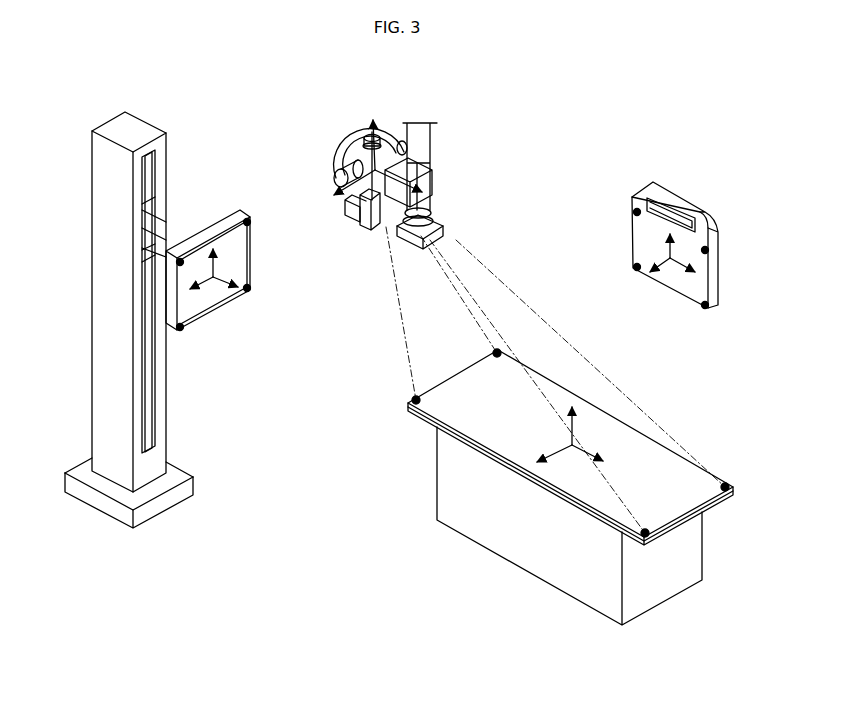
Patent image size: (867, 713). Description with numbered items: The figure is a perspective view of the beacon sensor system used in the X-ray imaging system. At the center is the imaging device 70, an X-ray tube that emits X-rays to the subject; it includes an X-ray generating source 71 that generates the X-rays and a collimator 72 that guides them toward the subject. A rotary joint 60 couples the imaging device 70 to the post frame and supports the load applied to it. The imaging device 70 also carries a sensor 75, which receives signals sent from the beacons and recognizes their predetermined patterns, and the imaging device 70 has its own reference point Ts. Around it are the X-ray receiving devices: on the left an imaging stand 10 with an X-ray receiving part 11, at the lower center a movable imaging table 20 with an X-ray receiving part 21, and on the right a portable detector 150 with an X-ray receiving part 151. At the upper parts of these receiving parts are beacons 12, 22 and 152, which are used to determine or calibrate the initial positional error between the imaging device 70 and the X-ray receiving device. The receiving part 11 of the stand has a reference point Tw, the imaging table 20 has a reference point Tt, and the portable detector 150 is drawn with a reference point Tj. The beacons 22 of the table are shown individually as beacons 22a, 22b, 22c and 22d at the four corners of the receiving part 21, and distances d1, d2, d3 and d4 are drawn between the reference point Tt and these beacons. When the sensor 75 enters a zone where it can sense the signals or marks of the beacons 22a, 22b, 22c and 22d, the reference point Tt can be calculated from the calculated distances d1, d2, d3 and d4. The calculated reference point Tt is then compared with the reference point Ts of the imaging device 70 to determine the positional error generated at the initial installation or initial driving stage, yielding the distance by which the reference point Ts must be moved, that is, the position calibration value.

The imaging stand 10 is at (88, 185).
The X-ray receiving part 11 is at (210, 298).
The beacon 12 is at (182, 330).
The imaging table 20 is at (583, 487).
The X-ray receiving part 21 is at (699, 503).
The beacon 22 is at (535, 509).
The beacon 22a is at (495, 357).
The beacon 22b is at (414, 404).
The beacon 22c is at (722, 488).
The beacon 22d is at (603, 598).
The rotary joint 60 is at (405, 214).
The imaging device 70 is at (355, 124).
The X-ray generating source 71 is at (333, 177).
The collimator 72 is at (358, 202).
The sensor 75 is at (363, 224).
The portable detector 150 is at (668, 192).
The X-ray receiving part 151 is at (704, 264).
The beacon 152 is at (709, 305).
The distance d1 is at (465, 307).
The distance d2 is at (400, 313).
The distance d3 is at (543, 318).
The distance d4 is at (610, 481).
The reference point of the imaging device Ts is at (402, 171).
The reference point of the X-ray receiving device Tw is at (215, 277).
The reference point of the imaging table Tt is at (571, 445).
The jig coordinate frame Tj is at (672, 257).